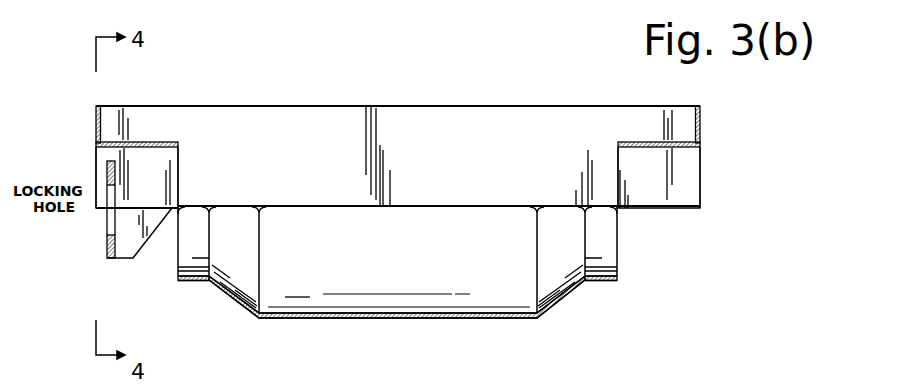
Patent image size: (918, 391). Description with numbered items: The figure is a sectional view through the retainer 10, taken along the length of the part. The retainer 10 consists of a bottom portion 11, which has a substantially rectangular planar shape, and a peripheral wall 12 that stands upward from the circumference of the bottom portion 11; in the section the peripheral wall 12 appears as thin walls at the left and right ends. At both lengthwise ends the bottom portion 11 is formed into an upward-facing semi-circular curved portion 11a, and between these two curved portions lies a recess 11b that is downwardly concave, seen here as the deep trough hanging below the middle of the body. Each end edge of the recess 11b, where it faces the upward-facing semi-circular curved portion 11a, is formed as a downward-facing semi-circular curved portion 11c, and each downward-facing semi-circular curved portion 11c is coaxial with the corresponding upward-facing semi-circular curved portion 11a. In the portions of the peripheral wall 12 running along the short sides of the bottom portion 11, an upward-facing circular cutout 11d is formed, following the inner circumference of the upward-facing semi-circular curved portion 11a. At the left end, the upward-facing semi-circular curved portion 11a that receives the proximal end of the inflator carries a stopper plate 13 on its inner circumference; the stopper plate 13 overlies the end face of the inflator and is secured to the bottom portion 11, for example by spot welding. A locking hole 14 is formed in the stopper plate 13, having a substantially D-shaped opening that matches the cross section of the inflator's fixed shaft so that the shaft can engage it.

The retainer 10 is at (477, 93).
The bottom portion 11 is at (313, 203).
The upward-facing semi-circular curved portion 11a is at (158, 140).
The recess 11b is at (416, 310).
The downward-facing semi-circular curved portion 11c is at (193, 270).
The upward-facing circular cutout 11d is at (95, 163).
The peripheral wall 12 is at (94, 126).
The stopper plate 13 is at (106, 256).
The locking hole 14 is at (106, 222).